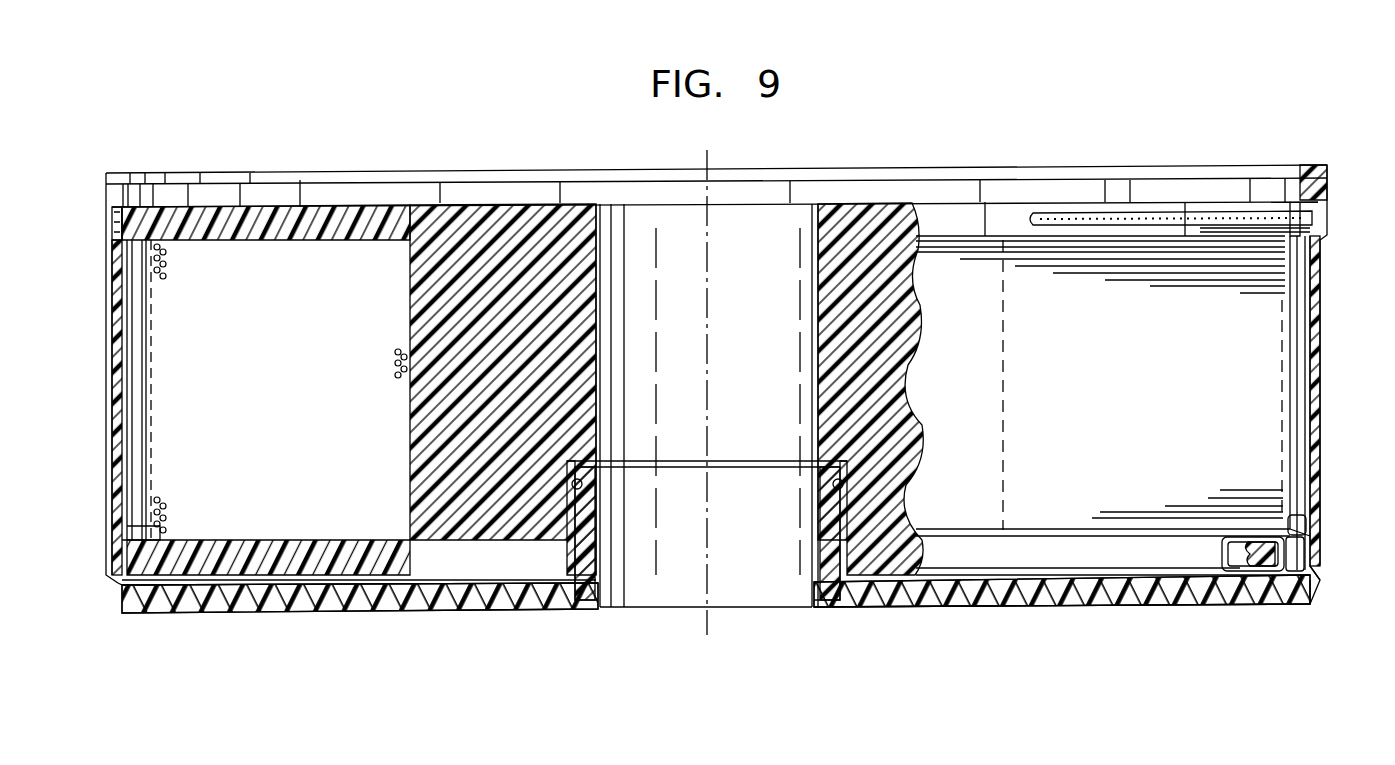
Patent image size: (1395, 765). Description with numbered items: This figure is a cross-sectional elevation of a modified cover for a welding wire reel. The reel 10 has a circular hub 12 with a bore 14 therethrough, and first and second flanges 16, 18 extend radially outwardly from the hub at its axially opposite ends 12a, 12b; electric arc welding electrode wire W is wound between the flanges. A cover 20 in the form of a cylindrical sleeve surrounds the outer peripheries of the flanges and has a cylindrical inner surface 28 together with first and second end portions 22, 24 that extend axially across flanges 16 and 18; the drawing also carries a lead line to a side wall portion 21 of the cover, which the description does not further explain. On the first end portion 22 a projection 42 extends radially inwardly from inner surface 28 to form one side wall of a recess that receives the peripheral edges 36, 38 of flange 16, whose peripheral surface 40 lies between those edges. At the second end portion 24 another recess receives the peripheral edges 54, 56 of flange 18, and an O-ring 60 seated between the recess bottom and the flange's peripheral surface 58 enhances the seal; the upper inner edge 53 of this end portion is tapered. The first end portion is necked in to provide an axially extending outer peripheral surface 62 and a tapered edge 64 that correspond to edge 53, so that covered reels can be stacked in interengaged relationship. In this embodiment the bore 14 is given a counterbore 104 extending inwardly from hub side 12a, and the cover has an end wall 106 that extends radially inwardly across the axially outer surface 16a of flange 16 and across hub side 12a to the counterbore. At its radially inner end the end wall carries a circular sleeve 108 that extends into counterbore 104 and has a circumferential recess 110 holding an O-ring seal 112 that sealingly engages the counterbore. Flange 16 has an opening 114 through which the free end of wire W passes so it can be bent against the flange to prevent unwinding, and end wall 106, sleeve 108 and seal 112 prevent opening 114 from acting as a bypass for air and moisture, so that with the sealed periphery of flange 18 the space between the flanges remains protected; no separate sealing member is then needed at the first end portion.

The reel 10 is at (440, 203).
The circular hub 12 is at (499, 228).
The first end of hub 12a is at (490, 582).
The second end of hub 12b is at (556, 205).
The bore 14 is at (620, 205).
The first flange 16 is at (1100, 570).
The axially outer surface of first flange 16a is at (356, 576).
The second flange 18 is at (345, 205).
The cover 20 is at (1338, 284).
The inner side wall panel 21 is at (1316, 372).
The first end portion 22 is at (1327, 526).
The second end portion 24 is at (1331, 196).
The cylindrical inner surface 28 is at (1304, 378).
The peripheral edge 36 is at (1050, 576).
The peripheral edge 38 is at (1034, 533).
The peripheral surface 40 is at (120, 578).
The projection 42 is at (1307, 524).
The peripheral edge 53 is at (1306, 170).
The peripheral edge 54 is at (1060, 242).
The peripheral edge 56 is at (1122, 200).
The peripheral surface 58 is at (113, 241).
The O-ring 60 is at (112, 216).
The outer peripheral surface 62 is at (1312, 604).
The tapered edge 64 is at (1320, 572).
The counterbore 104 is at (840, 568).
The end wall 106 is at (990, 602).
The circular sleeve 108 is at (599, 568).
The circumferential recess 110 is at (582, 488).
The O-ring seal 112 is at (833, 488).
The opening 114 is at (1286, 550).
The electrode wire W is at (1098, 246).